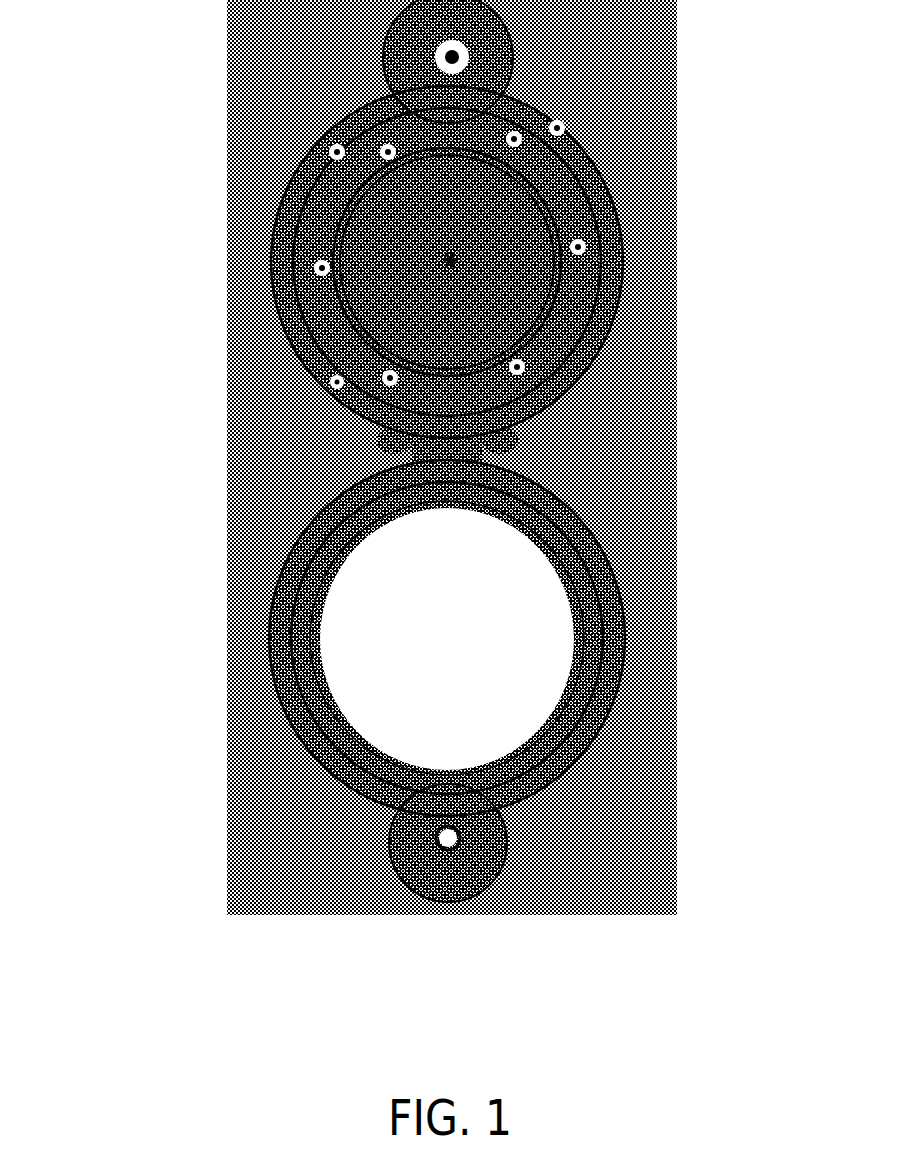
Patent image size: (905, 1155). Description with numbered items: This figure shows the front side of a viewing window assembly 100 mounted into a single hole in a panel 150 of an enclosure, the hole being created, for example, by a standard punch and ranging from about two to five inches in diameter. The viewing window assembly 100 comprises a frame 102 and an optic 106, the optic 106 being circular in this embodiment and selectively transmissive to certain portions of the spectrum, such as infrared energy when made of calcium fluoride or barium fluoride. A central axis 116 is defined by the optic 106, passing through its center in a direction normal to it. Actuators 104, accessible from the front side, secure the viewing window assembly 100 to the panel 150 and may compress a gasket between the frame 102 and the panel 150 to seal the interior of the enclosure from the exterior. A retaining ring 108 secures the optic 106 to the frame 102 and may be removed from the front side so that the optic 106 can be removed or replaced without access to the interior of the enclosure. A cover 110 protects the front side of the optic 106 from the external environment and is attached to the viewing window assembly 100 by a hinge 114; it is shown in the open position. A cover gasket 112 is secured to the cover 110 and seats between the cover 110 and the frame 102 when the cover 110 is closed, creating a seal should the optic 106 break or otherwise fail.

The viewing window assembly 100 is at (248, 215).
The frame 102 is at (600, 197).
The actuators 104 is at (337, 153).
The optic 106 is at (503, 283).
The retaining ring 108 is at (337, 333).
The cover 110 is at (283, 583).
The cover gasket 112 is at (318, 650).
The hinge 114 is at (495, 458).
The central axis 116 is at (445, 262).
The panel 150 is at (300, 48).